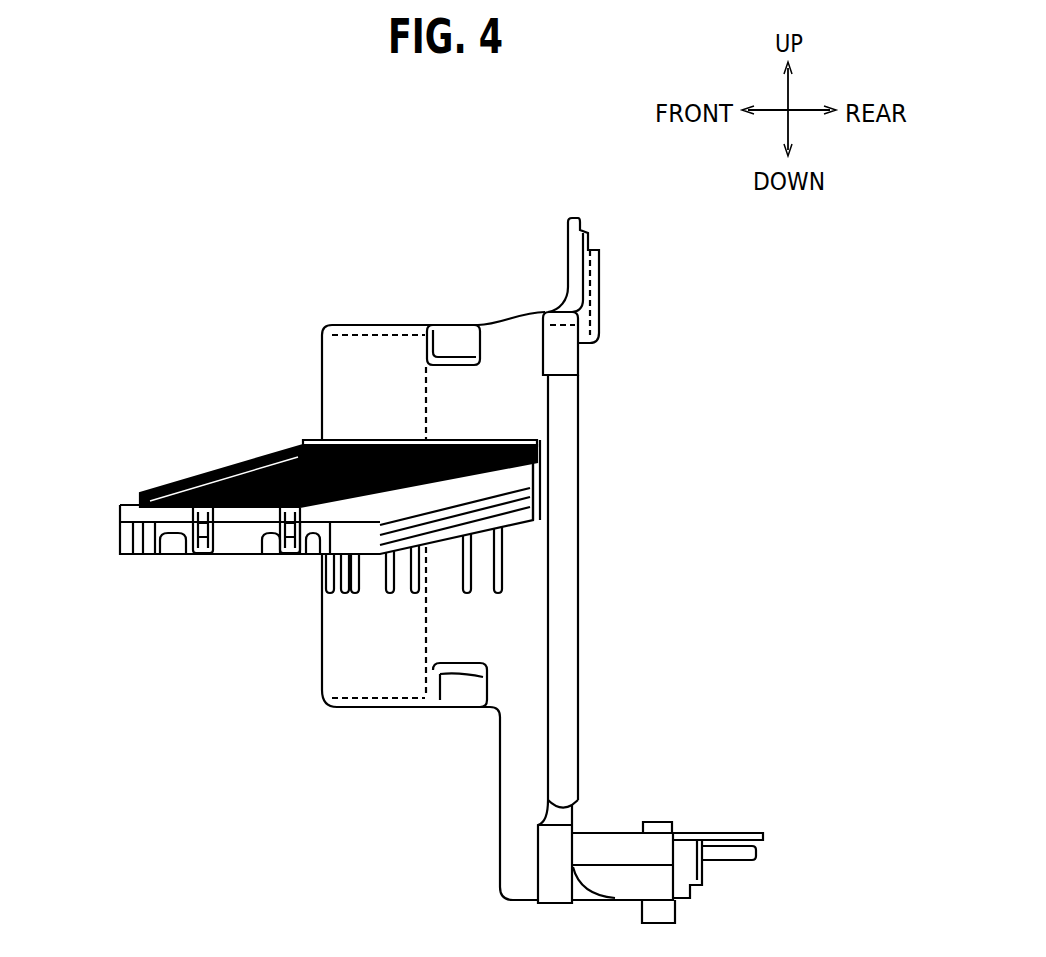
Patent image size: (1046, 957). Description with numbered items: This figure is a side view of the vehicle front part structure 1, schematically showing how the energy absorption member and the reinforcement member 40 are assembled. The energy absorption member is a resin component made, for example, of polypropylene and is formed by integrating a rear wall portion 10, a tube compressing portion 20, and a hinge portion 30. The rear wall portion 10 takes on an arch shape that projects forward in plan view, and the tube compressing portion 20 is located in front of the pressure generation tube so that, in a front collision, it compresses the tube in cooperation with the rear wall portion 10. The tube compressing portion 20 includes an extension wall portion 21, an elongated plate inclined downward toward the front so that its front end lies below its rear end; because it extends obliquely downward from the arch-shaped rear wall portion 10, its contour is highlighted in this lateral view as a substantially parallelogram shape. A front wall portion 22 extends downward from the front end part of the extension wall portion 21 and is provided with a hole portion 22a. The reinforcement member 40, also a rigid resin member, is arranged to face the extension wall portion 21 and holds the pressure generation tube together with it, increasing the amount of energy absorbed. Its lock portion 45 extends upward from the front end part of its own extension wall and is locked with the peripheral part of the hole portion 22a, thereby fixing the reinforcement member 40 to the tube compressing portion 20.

The vehicle front part structure 1 is at (193, 260).
The rear wall portion 10 is at (507, 310).
The tube compressing portion 20 is at (168, 490).
The extension wall portion 21 is at (260, 468).
The front wall portion 22 is at (120, 513).
The hole portion 22a is at (197, 557).
The hinge portion 30 is at (310, 445).
The reinforcement member 40 is at (480, 530).
The lock portion 45 is at (192, 535).